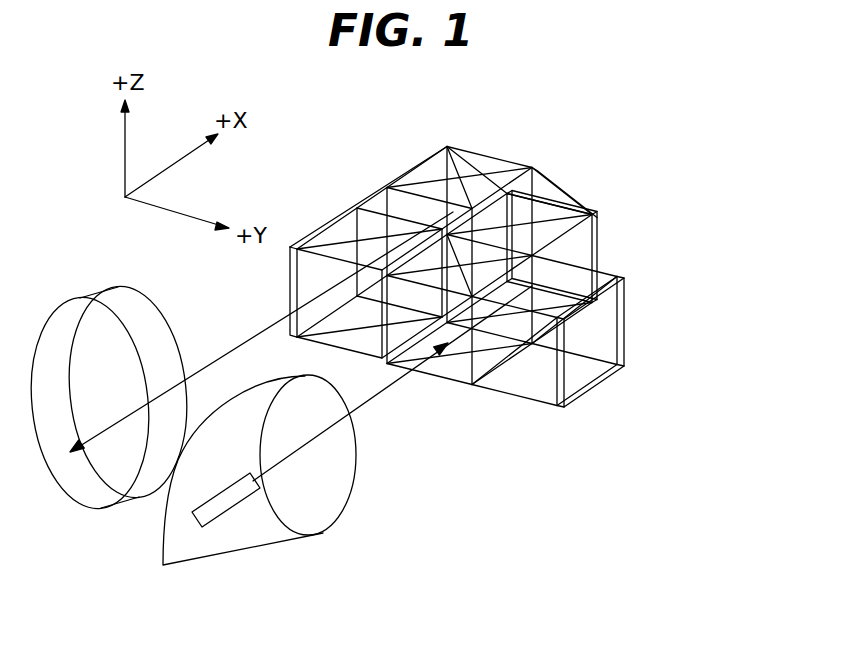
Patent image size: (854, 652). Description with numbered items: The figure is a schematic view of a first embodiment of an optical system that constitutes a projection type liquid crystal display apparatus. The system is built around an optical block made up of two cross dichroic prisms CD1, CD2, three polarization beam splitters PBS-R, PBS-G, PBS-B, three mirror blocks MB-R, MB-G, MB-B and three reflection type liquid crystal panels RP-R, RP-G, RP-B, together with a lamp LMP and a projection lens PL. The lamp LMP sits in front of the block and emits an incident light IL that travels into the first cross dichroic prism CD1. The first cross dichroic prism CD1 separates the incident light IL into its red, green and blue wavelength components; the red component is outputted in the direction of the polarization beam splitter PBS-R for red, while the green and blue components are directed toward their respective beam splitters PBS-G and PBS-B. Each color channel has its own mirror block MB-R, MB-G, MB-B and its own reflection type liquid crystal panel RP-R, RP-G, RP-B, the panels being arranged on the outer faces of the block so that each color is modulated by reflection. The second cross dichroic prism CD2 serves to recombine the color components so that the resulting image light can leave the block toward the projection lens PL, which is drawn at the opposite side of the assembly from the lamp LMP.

The projection lens PL is at (83, 497).
The lamp LMP is at (295, 540).
The incident light IL is at (366, 401).
The first cross dichroic prism CD1 is at (433, 378).
The second cross dichroic prism CD2 is at (440, 162).
The polarization beam splitter for G PBS-G is at (318, 348).
The polarization beam splitter for B PBS-B is at (568, 250).
The polarization beam splitter for R PBS-R is at (525, 398).
The mirror block for G MB-G is at (372, 190).
The mirror block for B MB-B is at (488, 152).
The mirror block for R MB-R is at (600, 262).
The reflection type liquid crystal panel for G RP-G is at (292, 218).
The reflection type liquid crystal panel for B RP-B is at (545, 193).
The reflection type liquid crystal panel for R RP-R is at (603, 375).